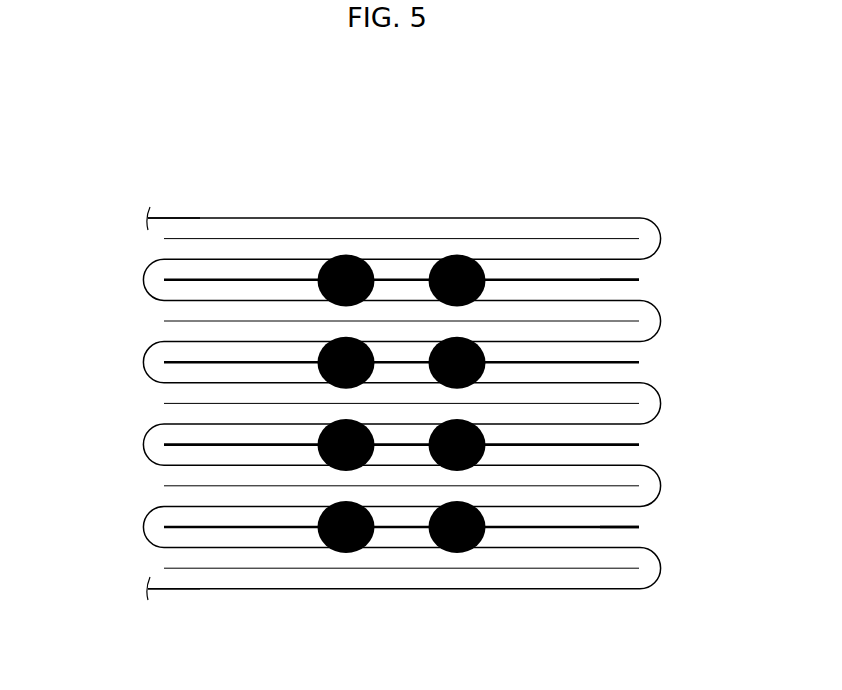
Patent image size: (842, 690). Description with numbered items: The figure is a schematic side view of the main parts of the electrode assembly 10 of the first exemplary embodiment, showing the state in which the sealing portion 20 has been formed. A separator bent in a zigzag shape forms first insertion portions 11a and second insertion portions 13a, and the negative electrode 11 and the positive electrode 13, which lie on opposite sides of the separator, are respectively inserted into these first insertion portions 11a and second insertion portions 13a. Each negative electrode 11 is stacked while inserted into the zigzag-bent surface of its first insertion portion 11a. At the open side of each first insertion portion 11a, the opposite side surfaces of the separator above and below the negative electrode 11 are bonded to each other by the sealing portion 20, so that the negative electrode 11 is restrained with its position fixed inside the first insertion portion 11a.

The electrode assembly 10 is at (485, 156).
The negative electrode 11 is at (183, 281).
The first insertion portion 11a is at (672, 269).
The positive electrode 13 is at (628, 239).
The second insertion portion 13a is at (163, 230).
The sealing portion 20 is at (451, 256).